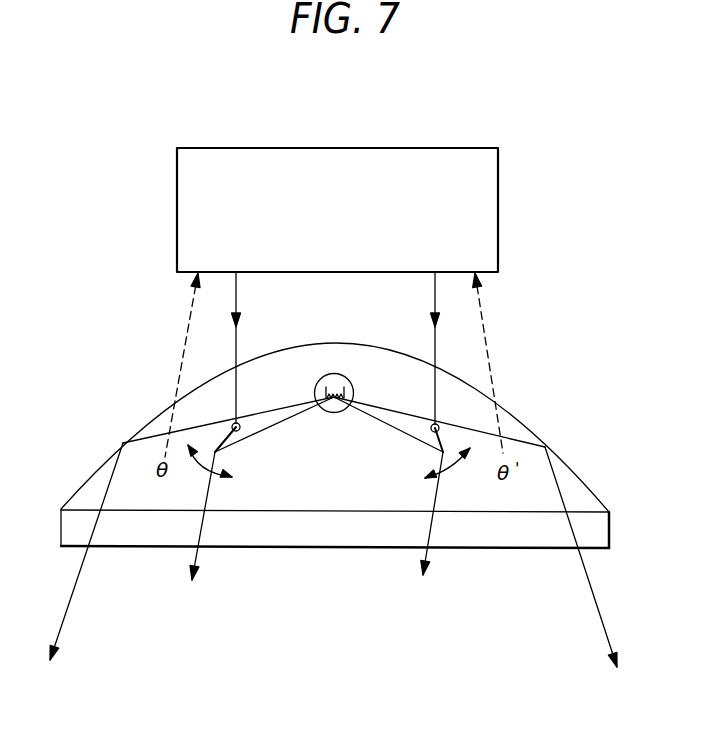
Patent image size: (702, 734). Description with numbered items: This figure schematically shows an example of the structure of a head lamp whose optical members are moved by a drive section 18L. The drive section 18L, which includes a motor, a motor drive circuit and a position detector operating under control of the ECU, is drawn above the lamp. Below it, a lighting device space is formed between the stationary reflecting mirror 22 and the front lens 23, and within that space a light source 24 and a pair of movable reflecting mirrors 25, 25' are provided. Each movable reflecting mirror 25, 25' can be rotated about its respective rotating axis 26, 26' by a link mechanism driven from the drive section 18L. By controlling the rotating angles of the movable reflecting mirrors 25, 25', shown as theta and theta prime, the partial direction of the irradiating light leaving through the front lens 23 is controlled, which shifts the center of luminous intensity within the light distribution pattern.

The drive section 18L is at (378, 148).
The stationary reflecting mirror 22 is at (518, 415).
The front lens 23 is at (327, 548).
The light source 24 is at (337, 414).
The movable reflecting mirror 25 is at (191, 515).
The movable reflecting mirror 25' is at (450, 516).
The rotating axis 26 is at (258, 351).
The rotating axis 26' is at (416, 352).